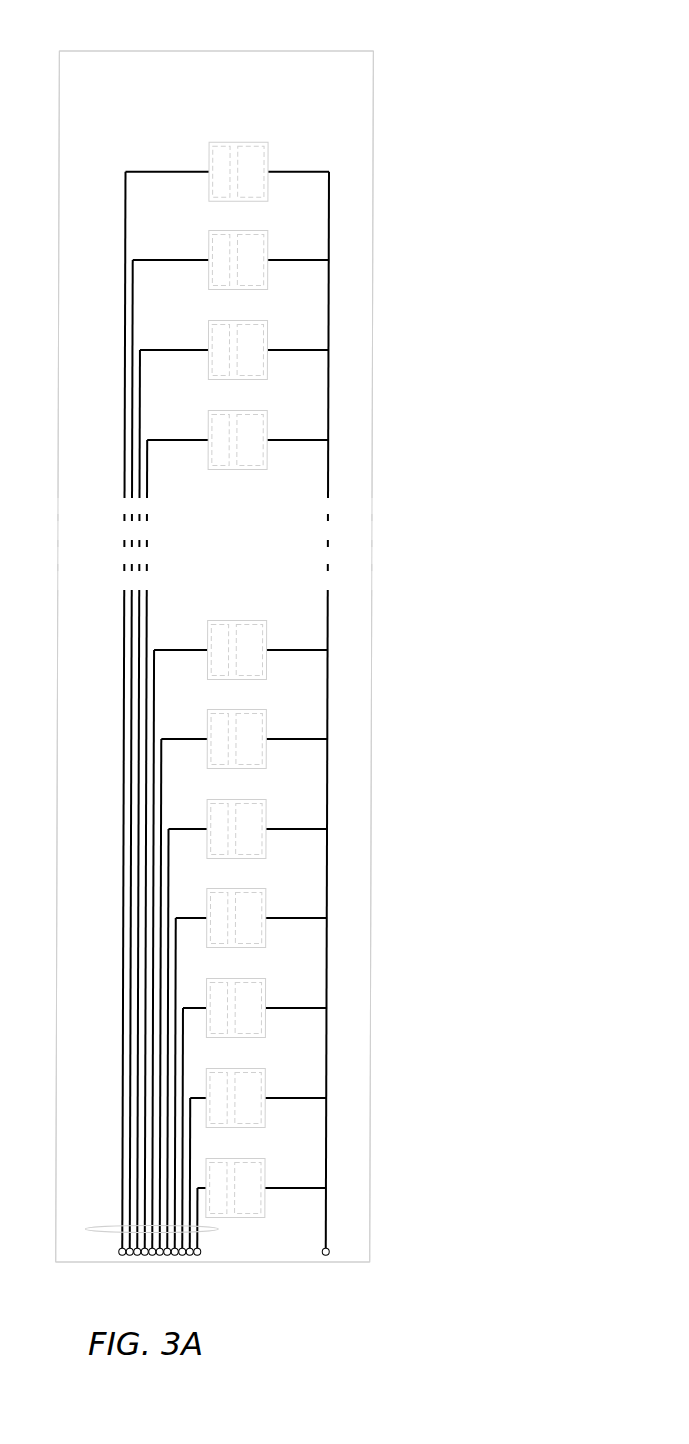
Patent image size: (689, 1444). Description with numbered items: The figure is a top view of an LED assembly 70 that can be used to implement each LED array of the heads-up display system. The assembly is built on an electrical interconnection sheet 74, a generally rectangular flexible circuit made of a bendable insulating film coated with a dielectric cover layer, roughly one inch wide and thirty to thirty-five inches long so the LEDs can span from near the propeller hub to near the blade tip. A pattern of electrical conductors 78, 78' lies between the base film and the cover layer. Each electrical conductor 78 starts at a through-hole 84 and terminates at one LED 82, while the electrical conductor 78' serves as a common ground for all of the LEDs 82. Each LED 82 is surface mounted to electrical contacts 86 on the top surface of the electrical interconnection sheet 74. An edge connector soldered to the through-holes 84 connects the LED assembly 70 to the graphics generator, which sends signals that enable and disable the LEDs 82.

The LED assembly 70 is at (59, 51).
The electrical interconnection sheet 74 is at (121, 93).
The LED 82 is at (268, 139).
The electrical contacts 86 is at (250, 440).
The electrical conductor 78 is at (139, 1207).
The through-hole 84 is at (198, 1253).
The electrical conductor 78' is at (350, 1266).